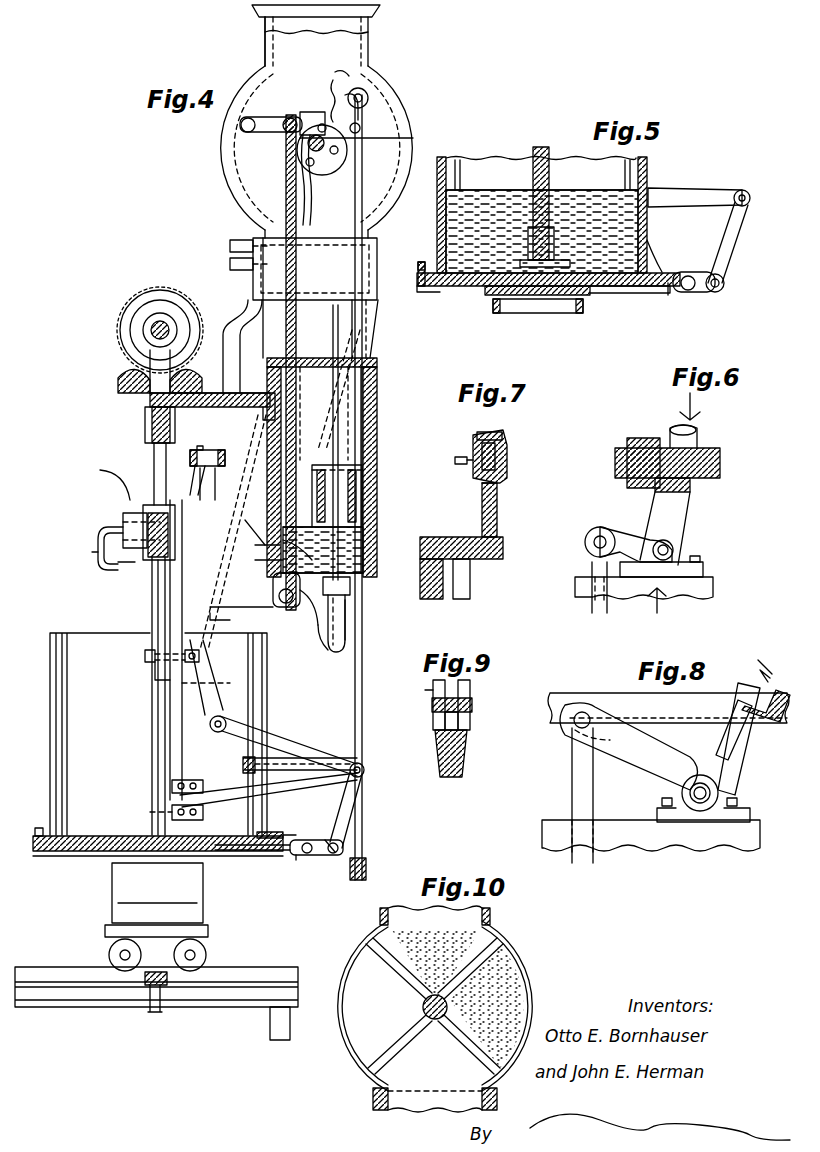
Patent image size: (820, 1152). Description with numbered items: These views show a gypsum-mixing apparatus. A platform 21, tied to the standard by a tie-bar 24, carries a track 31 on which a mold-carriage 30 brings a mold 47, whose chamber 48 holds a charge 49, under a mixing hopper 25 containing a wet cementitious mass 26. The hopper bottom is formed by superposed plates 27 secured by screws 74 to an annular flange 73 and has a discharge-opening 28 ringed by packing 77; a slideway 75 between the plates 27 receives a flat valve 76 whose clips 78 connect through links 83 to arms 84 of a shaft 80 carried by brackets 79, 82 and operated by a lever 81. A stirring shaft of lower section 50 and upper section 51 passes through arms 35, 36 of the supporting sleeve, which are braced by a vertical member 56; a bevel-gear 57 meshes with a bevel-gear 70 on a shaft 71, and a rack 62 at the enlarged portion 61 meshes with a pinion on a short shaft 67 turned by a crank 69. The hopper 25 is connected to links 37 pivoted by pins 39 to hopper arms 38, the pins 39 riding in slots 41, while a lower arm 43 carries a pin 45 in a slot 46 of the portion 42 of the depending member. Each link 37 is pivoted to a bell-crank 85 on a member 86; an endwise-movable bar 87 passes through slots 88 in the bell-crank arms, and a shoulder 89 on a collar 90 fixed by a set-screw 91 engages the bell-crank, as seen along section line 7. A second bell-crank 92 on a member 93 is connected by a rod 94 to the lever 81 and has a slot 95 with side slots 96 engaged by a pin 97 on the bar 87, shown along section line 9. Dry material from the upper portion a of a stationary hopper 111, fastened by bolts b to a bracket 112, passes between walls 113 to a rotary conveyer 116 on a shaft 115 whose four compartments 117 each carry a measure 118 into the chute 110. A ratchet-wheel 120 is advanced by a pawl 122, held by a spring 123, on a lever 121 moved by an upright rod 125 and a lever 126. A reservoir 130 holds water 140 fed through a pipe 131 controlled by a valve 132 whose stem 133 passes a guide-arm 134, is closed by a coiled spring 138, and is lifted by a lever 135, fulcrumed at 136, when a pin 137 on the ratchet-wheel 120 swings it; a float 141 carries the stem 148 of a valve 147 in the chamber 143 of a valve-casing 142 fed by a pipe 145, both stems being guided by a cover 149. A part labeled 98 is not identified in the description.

In FIG. 6, the section line 7— 7 is at (674, 513).
In FIG. 8, the section line 9— 9 is at (772, 667).
In FIG. 4, the platform 21 is at (270, 1022).
In FIG. 4, the tie-bar 24 is at (152, 990).
In FIG. 4, the mixing hopper 25 is at (70, 630).
In FIG. 5, the mixing hopper 25 is at (647, 175).
In FIG. 5, the wet cementitious mass 26 is at (470, 186).
In FIG. 4, the horizontal metal plates 27 is at (40, 852).
In FIG. 5, the horizontal metal plates 27 is at (446, 292).
In FIG. 5, the discharge-opening 28 is at (550, 296).
In FIG. 4, the mold-carriage 30 is at (205, 950).
In FIG. 4, the horizontal track 31 is at (255, 975).
In FIG. 4, the upper arm of sleeve 35 is at (145, 425).
In FIG. 4, the lower arm of sleeve 36 is at (148, 560).
In FIG. 7, the lower arm of sleeve 36 is at (431, 591).
In FIG. 6, the lower arm of sleeve 36 is at (713, 590).
In FIG. 8, the lower arm of sleeve 36 is at (745, 845).
In FIG. 4, the links 37 is at (198, 690).
In FIG. 7, the links 37 is at (470, 572).
In FIG. 4, the hopper arm 38 is at (208, 726).
In FIG. 4, the pivotal pin 39 is at (145, 656).
In FIG. 4, the vertical slot 41 is at (155, 678).
In FIG. 4, the downward extension of depending member 42 is at (182, 766).
In FIG. 4, the rigid arm 43 is at (203, 814).
In FIG. 4, the horizontal pin 45 is at (150, 814).
In FIG. 4, the vertical slot 46 is at (152, 586).
In FIG. 4, the mold 47 is at (112, 895).
In FIG. 5, the mold 47 is at (495, 313).
In FIG. 5, the material-receiving chamber 48 is at (583, 305).
In FIG. 5, the charge 49 is at (530, 313).
In FIG. 5, the lower shaft-section 50 is at (533, 152).
In FIG. 4, the upper shaft-section 51 is at (152, 605).
In FIG. 4, the vertical member 56 is at (154, 455).
In FIG. 4, the bevel-gear 57 is at (118, 372).
In FIG. 4, the laterally enlarged portion 61 is at (126, 513).
In FIG. 4, the rack 62 is at (140, 570).
In FIG. 4, the short horizontal shaft 67 is at (108, 528).
In FIG. 4, the crank 69 is at (98, 550).
In FIG. 4, the bevel-gear 70 is at (128, 300).
In FIG. 4, the horizontal shaft 71 is at (150, 330).
In FIG. 4, the external annular flange 73 is at (290, 836).
In FIG. 5, the external annular flange 73 is at (418, 268).
In FIG. 4, the screws 74 is at (37, 828).
In FIG. 5, the screws 74 is at (422, 262).
In FIG. 5, the slideway 75 is at (612, 290).
In FIG. 4, the cut-off valve 76 is at (285, 852).
In FIG. 5, the cut-off valve 76 is at (660, 265).
In FIG. 4, the packing 77 is at (232, 856).
In FIG. 5, the packing 77 is at (615, 295).
In FIG. 4, the clips 78 is at (298, 862).
In FIG. 5, the clips 78 is at (676, 293).
In FIG. 4, the bracket 79 is at (245, 752).
In FIG. 5, the bracket 79 is at (700, 190).
In FIG. 4, the horizontal shaft 80 is at (360, 764).
In FIG. 5, the horizontal shaft 80 is at (750, 198).
In FIG. 4, the lever 81 is at (300, 738).
In FIG. 4, the bracket 82 is at (296, 786).
In FIG. 4, the link 83 is at (332, 855).
In FIG. 5, the link 83 is at (700, 292).
In FIG. 4, the downwardly projecting arm 84 is at (360, 796).
In FIG. 5, the downwardly projecting arm 84 is at (733, 248).
In FIG. 7, the bell-crank 85 is at (500, 525).
In FIG. 6, the bell-crank 85 is at (645, 535).
In FIG. 7, the member 86 is at (450, 537).
In FIG. 6, the member 86 is at (705, 570).
In FIG. 4, the bar 87 is at (200, 450).
In FIG. 7, the bar 87 is at (500, 482).
In FIG. 6, the bar 87 is at (720, 465).
In FIG. 9, the bar 87 is at (433, 686).
In FIG. 8, the bar 87 is at (620, 694).
In FIG. 7, the slot 88 is at (498, 432).
In FIG. 6, the slot 88 is at (690, 430).
In FIG. 6, the shoulder 89 is at (668, 504).
In FIG. 7, the collar 90 is at (477, 436).
In FIG. 6, the collar 90 is at (640, 438).
In FIG. 7, the set-screw 91 is at (460, 465).
In FIG. 4, the bell-crank 92 is at (212, 495).
In FIG. 9, the bell-crank 92 is at (458, 778).
In FIG. 8, the bell-crank 92 is at (700, 760).
In FIG. 4, the member 93 is at (100, 470).
In FIG. 8, the member 93 is at (662, 818).
In FIG. 4, the rod 94 is at (245, 524).
In FIG. 8, the rod 94 is at (578, 790).
In FIG. 9, the slot 95 is at (470, 738).
In FIG. 8, the slot 95 is at (740, 760).
In FIG. 9, the slot 96 is at (470, 720).
In FIG. 8, the slot 96 is at (748, 683).
In FIG. 9, the pin 97 is at (472, 703).
In FIG. 8, the pin 97 is at (760, 725).
In FIG. 4, the rod 98 is at (232, 448).
In FIG. 4, the upright chute 110 is at (362, 320).
In FIG. 10, the upright chute 110 is at (373, 1100).
In FIG. 4, the stationary hopper 111 is at (262, 188).
In FIG. 10, the stationary hopper 111 is at (388, 1112).
In FIG. 4, the bracket 112 is at (245, 300).
In FIG. 4, the opposite walls 113 is at (390, 110).
In FIG. 10, the opposite walls 113 is at (358, 945).
In FIG. 4, the horizontal shaft 115 is at (362, 130).
In FIG. 10, the horizontal shaft 115 is at (423, 1010).
In FIG. 10, the rotary conveyer 116 is at (485, 950).
In FIG. 10, the peripheral compartments 117 is at (395, 1040).
In FIG. 10, the measure of dry materials 118 is at (510, 985).
In FIG. 4, the ratchet-wheel 120 is at (330, 175).
In FIG. 4, the lever 121 is at (365, 122).
In FIG. 4, the pawl 122 is at (332, 88).
In FIG. 4, the spring 123 is at (350, 76).
In FIG. 4, the upright rod 125 is at (352, 155).
In FIG. 4, the lever 126 is at (350, 882).
In FIG. 4, the water-supplying reservoir 130 is at (378, 398).
In FIG. 4, the water-feeding pipe 131 is at (278, 610).
In FIG. 4, the valve 132 is at (283, 565).
In FIG. 4, the valve-stem 133 is at (292, 273).
In FIG. 4, the guide-arm 134 is at (280, 490).
In FIG. 4, the lever 135 is at (284, 132).
In FIG. 4, the fulcrum 136 is at (240, 125).
In FIG. 4, the pins 137 is at (318, 112).
In FIG. 4, the coiled spring 138 is at (280, 548).
In FIG. 4, the water 140 is at (370, 500).
In FIG. 4, the float 141 is at (362, 455).
In FIG. 4, the valve-casing 142 is at (316, 622).
In FIG. 4, the interior chamber 143 is at (320, 648).
In FIG. 4, the pipe 145 is at (335, 650).
In FIG. 4, the valve 147 is at (350, 612).
In FIG. 4, the stem 148 is at (334, 306).
In FIG. 4, the cover 149 is at (381, 356).
In FIG. 4, the upper portion of stationary hopper a is at (370, 32).
In FIG. 10, the upper portion of stationary hopper a is at (490, 908).
In FIG. 4, the bolts b is at (230, 252).